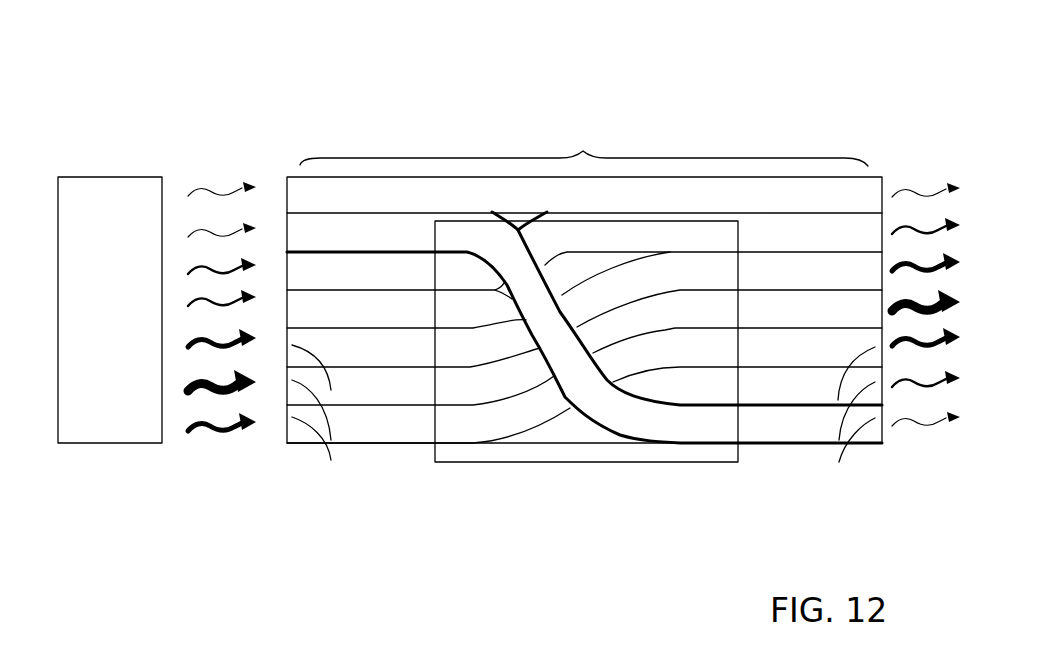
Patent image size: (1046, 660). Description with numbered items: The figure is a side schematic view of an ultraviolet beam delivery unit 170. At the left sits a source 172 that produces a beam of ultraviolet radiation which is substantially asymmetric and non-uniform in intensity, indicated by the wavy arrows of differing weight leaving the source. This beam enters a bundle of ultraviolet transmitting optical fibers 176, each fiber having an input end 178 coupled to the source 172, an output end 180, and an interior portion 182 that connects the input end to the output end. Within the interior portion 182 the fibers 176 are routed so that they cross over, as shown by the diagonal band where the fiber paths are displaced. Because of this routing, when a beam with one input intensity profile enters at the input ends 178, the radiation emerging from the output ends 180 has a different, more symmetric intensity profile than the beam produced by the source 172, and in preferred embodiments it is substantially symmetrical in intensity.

The ultraviolet beam delivery unit 170 is at (206, 110).
The source 172 is at (109, 210).
The ultraviolet transmitting optical fiber 176 is at (508, 383).
The input end 178 is at (331, 372).
The output end 180 is at (838, 395).
The interior portion 182 is at (584, 278).